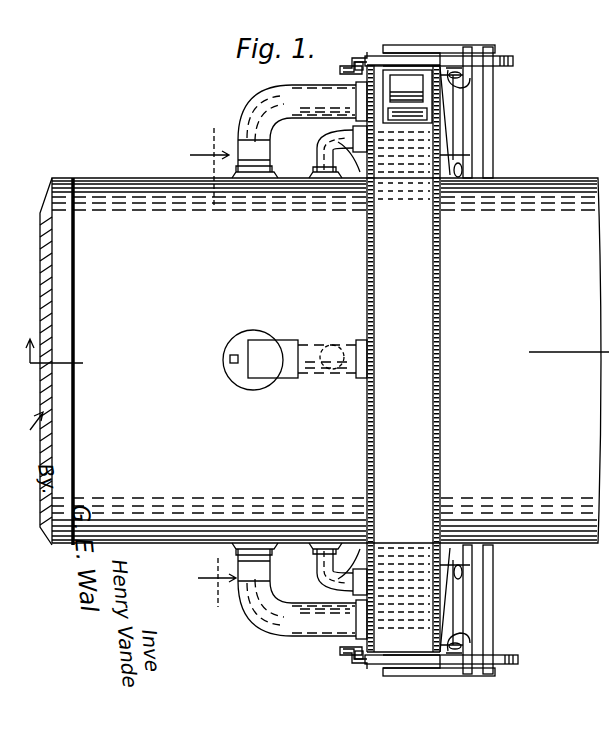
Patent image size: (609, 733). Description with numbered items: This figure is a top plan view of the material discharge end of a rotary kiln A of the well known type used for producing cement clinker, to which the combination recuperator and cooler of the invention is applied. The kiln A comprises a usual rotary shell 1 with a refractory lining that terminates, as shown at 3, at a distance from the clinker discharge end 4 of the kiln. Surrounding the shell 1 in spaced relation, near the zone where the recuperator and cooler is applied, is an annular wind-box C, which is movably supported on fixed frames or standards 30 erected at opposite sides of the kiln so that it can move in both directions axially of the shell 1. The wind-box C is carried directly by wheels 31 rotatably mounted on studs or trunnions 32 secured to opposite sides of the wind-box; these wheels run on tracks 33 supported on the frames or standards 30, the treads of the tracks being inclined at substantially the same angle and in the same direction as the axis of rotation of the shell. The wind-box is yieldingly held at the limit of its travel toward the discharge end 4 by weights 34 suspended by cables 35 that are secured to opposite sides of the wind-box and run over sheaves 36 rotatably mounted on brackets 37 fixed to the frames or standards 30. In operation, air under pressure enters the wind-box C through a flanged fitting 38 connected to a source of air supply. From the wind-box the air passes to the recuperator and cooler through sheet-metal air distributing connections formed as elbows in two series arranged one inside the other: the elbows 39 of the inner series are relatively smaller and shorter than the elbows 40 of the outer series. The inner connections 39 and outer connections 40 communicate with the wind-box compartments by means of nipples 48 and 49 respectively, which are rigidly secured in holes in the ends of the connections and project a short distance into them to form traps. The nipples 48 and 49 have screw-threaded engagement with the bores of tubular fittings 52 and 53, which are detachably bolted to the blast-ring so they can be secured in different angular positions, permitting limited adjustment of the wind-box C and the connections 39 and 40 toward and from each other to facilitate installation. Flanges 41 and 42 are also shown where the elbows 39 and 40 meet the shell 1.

The rotary shell 1 is at (139, 205).
The termination of the lining 3 is at (209, 368).
The clinker discharge end 4 is at (51, 395).
The fixed frames or standards 30 is at (490, 131).
The wheels 31 is at (390, 58).
The studs or trunnions 32 is at (408, 46).
The tracks 33 is at (514, 61).
The weights 34 is at (470, 86).
The cables 35 is at (340, 70).
The sheaves 36 is at (350, 64).
The brackets 37 is at (365, 52).
The flanged fitting 38 is at (410, 125).
The inner series elbows 39 is at (325, 140).
The outer series elbows 40 is at (250, 112).
The flange 41 is at (311, 174).
The flange 42 is at (276, 172).
The nipple 48 is at (364, 172).
The nipple 49 is at (278, 676).
The tubular fitting 52 is at (366, 575).
The tubular fitting 53 is at (358, 112).
The annular wind-box C is at (403, 358).
The kiln A is at (538, 173).